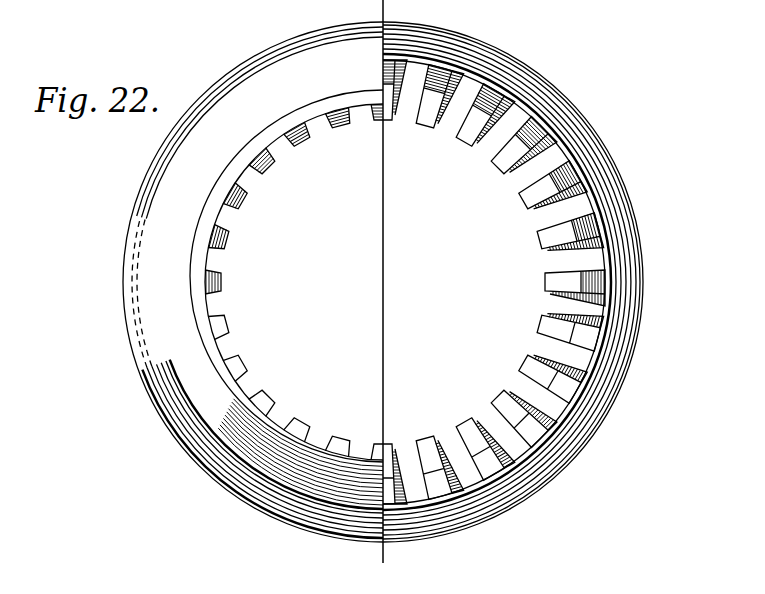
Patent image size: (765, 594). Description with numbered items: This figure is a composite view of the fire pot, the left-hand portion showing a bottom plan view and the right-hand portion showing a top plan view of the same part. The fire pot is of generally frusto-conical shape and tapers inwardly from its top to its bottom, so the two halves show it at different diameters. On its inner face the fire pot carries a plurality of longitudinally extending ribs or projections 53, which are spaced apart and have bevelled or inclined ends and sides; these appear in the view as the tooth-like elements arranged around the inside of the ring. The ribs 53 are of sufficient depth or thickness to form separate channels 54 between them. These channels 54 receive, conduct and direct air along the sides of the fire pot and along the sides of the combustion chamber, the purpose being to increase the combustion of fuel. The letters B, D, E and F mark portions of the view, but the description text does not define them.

The ring gear body (left side) B is at (232, 282).
The ring gear outer rim D is at (398, 282).
The internal gear teeth E is at (264, 166).
The teeth shown in perspective F is at (497, 427).
The longitudinally extending ribs or projections 53 is at (538, 130).
The channels 54 is at (512, 103).